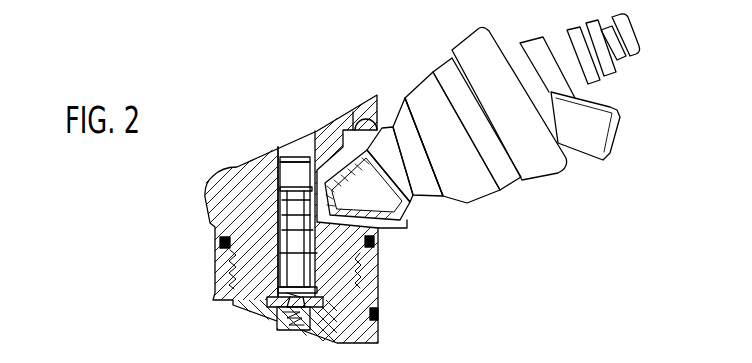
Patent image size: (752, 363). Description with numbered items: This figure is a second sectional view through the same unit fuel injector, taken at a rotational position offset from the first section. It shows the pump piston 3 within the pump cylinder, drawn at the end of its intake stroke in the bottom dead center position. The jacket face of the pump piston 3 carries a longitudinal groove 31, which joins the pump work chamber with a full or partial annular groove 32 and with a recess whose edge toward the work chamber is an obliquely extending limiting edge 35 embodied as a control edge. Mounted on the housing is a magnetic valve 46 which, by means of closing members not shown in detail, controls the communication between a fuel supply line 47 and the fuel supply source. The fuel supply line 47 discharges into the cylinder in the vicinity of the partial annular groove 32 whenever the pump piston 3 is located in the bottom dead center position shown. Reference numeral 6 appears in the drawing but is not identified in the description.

The pump piston 3 is at (290, 173).
The limiting edge 35 is at (288, 220).
The longitudinal groove 31 is at (221, 241).
The partial annular groove 32 is at (230, 262).
The nut 6 is at (182, 325).
The fuel supply line 47 is at (372, 258).
The magnetic valve 46 is at (470, 180).